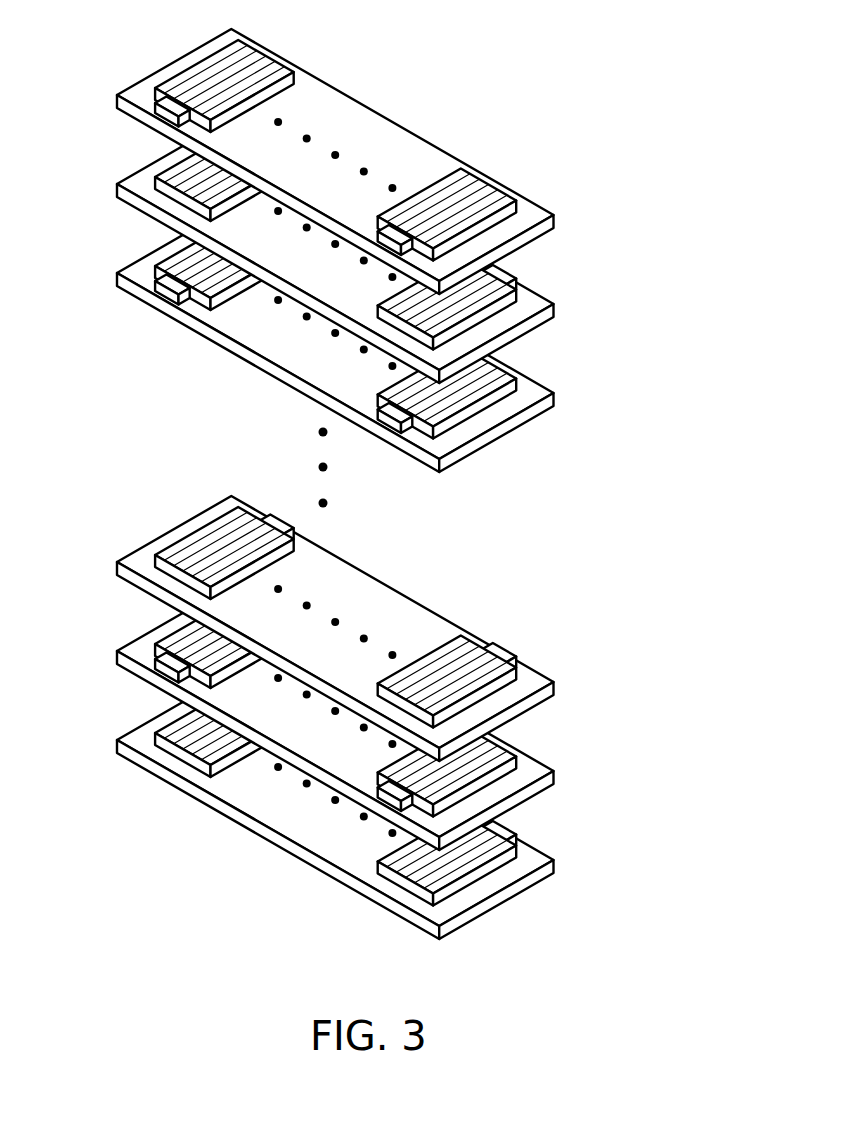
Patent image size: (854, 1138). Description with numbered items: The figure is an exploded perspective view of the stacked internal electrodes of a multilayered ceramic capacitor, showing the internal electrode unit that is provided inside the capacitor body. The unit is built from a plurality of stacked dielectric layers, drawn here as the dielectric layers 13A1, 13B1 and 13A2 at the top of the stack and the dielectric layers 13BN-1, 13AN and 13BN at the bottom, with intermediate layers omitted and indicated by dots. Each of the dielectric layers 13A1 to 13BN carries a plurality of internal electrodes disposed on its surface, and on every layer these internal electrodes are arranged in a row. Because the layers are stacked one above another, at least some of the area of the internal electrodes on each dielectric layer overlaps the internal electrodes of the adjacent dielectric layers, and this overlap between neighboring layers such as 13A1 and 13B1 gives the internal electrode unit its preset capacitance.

The dielectric layer 13A1 is at (378, 143).
The dielectric layer 13B1 is at (378, 143).
The dielectric layer 13A2 is at (401, 341).
The dielectric layer 13BN-1 is at (413, 630).
The dielectric layer 13AN is at (402, 719).
The dielectric layer 13BN is at (402, 808).